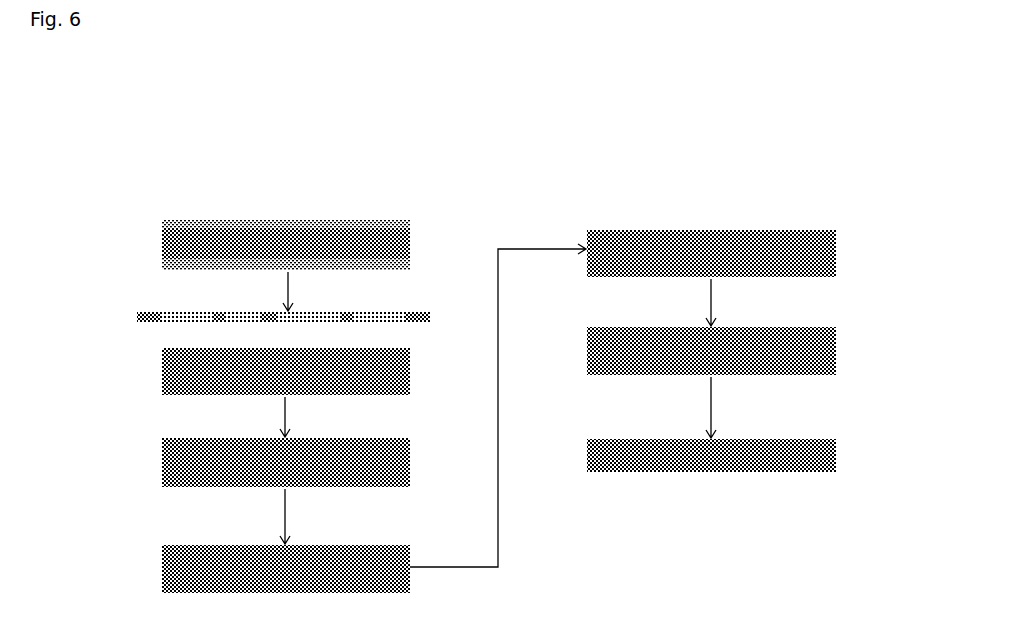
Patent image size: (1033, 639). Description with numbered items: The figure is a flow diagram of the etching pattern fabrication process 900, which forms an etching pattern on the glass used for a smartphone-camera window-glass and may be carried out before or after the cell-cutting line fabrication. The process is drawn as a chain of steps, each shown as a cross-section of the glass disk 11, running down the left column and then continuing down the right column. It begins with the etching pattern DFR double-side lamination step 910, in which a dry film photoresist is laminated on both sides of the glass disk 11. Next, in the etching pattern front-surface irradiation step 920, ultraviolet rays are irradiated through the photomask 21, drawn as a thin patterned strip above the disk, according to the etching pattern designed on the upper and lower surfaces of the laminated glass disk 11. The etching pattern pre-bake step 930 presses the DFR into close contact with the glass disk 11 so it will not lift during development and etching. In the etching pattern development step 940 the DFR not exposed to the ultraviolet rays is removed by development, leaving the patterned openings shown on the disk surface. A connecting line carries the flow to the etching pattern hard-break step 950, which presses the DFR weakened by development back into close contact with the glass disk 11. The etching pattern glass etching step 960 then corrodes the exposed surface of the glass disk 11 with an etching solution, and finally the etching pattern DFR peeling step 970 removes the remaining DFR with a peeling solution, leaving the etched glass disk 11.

The etching pattern fabrication process 900 is at (412, 333).
The etching pattern DFR double-side lamination step 910 is at (157, 221).
The glass disk 11 is at (312, 242).
The photomask 21 is at (156, 313).
The etching pattern front-surface irradiation step 920 is at (157, 355).
The etching pattern pre-bake step 930 is at (157, 449).
The etching pattern development step 940 is at (157, 565).
The etching pattern hard-break step 950 is at (848, 254).
The etching pattern glass etching step 960 is at (848, 358).
The etching pattern DFR peeling step 970 is at (848, 453).